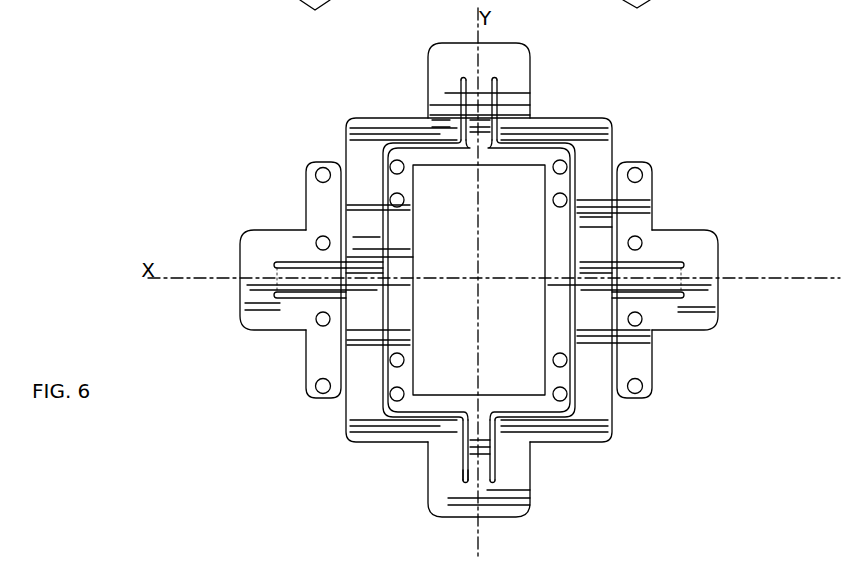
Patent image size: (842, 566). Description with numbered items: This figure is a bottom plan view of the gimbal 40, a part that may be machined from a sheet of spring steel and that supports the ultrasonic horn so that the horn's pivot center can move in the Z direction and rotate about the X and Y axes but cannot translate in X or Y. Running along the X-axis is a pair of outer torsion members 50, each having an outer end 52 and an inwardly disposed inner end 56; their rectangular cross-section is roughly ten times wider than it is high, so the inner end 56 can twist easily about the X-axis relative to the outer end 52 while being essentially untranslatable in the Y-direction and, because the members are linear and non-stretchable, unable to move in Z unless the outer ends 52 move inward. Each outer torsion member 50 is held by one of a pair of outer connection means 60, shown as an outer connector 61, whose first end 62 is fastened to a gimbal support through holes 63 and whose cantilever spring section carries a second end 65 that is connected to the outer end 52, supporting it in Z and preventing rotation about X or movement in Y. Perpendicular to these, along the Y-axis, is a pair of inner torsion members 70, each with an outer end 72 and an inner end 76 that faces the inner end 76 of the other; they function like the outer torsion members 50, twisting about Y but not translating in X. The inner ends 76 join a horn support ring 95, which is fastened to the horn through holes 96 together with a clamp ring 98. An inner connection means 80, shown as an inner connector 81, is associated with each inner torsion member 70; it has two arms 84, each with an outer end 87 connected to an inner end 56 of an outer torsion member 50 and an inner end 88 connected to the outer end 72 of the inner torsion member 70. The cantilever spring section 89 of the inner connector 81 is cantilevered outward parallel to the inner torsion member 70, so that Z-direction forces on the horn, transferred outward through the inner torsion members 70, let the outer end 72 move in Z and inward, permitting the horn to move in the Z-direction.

The gimbal 40 is at (230, 396).
The outer torsion member 50 is at (293, 282).
The outer end 52 is at (258, 282).
The inner end 56 is at (330, 285).
The outer connection means 60 is at (722, 218).
The outer connector 61 is at (258, 332).
The first end 62 is at (320, 162).
The holes 63 is at (320, 240).
The second end 65 is at (255, 245).
The inner torsion member 70 is at (498, 113).
The outer end 72 is at (477, 77).
The inner end 76 is at (498, 140).
The inner connection means 80 is at (414, 48).
The inner connector 81 is at (372, 118).
The arm 84 is at (407, 117).
The outer end 87 is at (363, 272).
The inner end 88 is at (455, 63).
The cantilever spring section 89 is at (432, 83).
The horn support ring 95 is at (557, 198).
The holes 96 is at (479, 280).
The clamp ring 98 is at (473, 467).